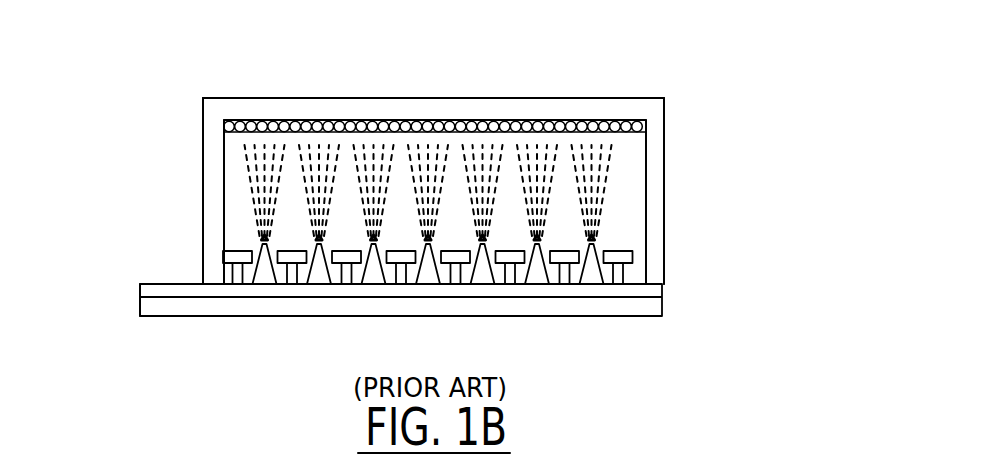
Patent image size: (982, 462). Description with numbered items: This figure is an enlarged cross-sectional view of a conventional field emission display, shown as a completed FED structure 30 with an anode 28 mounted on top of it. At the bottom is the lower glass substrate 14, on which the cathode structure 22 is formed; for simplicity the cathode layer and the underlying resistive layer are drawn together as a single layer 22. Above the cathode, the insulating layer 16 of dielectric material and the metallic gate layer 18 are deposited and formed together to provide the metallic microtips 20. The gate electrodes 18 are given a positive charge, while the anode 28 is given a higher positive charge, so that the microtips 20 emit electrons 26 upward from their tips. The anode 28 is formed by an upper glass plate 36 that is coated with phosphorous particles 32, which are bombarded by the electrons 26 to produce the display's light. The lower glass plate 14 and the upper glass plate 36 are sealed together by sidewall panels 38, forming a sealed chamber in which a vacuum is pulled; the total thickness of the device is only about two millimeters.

The glass substrate 14 is at (653, 310).
The insulating layer 16 is at (345, 242).
The metallic gate layer 18 is at (230, 253).
The metallic microtips 20 is at (540, 284).
The cathode structure 22 is at (140, 288).
The electrons 26 is at (275, 193).
The anode 28 is at (630, 98).
The completed FED structure 30 is at (603, 62).
The phosphorous particles 32 is at (223, 127).
The glass plate 36 is at (228, 106).
The sidewall panels 38 is at (212, 175).